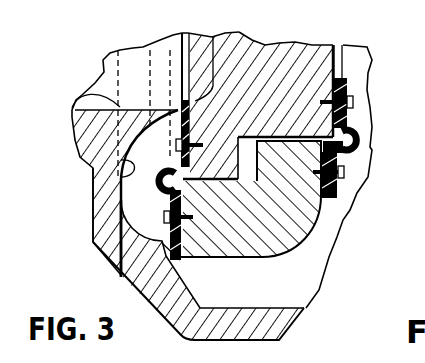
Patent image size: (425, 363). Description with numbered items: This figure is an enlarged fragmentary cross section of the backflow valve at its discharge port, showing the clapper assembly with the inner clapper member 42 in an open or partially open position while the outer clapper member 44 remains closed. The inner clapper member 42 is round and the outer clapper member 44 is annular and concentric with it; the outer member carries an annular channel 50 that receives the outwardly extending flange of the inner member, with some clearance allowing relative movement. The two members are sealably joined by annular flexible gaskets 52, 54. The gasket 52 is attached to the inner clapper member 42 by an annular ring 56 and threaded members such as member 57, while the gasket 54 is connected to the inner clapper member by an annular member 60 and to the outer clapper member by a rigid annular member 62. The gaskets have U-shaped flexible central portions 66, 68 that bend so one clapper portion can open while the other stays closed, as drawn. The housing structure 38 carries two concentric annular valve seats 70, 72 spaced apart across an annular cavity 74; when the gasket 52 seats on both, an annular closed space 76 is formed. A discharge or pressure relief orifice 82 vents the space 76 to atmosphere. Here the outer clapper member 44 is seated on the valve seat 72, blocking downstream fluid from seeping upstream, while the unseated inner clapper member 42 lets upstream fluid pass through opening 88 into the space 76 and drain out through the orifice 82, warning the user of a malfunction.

The housing structure 38 is at (280, 325).
The inner clapper member 42 is at (200, 33).
The outer clapper member 44 is at (273, 238).
The annular channel 50 is at (247, 150).
The flexible gasket 52 is at (217, 33).
The flexible gasket 54 is at (341, 72).
The annular ring 56 is at (172, 162).
The threaded member 57 is at (214, 259).
The annular member 60 is at (350, 93).
The rigid annular member 62 is at (343, 190).
The U-shaped flexible central portion 66 is at (156, 180).
The U-shaped flexible central portion 68 is at (363, 138).
The annular valve seat 70 is at (89, 89).
The annular valve seat 72 is at (123, 276).
The annular cavity 74 is at (97, 162).
The annular closed space 76 is at (140, 203).
The discharge or pressure relief orifice 82 is at (120, 243).
The opening 88 is at (178, 107).